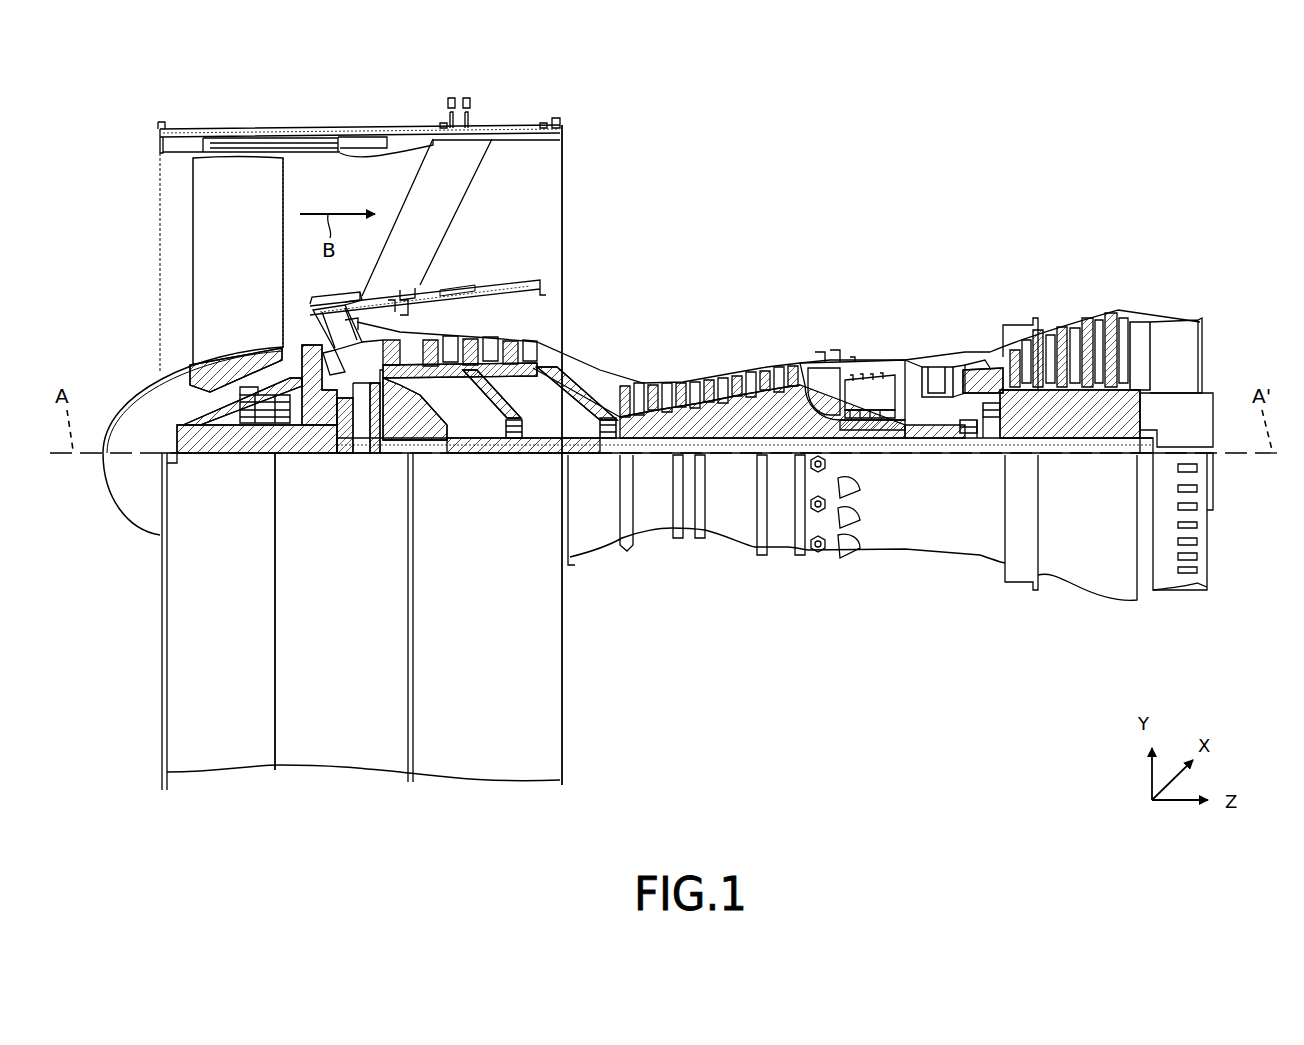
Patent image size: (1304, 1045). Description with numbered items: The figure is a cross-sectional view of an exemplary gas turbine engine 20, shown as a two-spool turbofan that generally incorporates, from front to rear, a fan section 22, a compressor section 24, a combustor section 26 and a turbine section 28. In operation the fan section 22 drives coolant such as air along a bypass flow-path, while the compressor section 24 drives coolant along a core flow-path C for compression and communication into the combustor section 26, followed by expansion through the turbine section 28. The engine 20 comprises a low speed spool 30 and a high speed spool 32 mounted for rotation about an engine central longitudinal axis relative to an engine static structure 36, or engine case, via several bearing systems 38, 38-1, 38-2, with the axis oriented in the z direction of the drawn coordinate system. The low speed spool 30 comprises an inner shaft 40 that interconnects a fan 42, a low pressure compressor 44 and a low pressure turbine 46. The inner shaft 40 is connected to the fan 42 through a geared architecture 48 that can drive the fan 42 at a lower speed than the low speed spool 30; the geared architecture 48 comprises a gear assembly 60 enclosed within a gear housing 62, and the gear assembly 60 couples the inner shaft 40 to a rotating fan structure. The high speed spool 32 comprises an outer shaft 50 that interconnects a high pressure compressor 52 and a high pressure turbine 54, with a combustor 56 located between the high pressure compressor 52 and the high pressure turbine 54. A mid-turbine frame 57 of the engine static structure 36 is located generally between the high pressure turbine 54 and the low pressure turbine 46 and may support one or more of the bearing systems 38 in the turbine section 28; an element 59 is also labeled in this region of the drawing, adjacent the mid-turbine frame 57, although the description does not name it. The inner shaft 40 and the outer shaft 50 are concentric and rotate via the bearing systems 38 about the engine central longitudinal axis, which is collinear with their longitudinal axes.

The gas turbine engine 20 is at (915, 168).
The fan section 22 is at (405, 108).
The compressor section 24 is at (415, 244).
The combustor section 26 is at (918, 244).
The turbine section 28 is at (1145, 244).
The low speed spool 30 is at (740, 462).
The high speed spool 32 is at (780, 415).
The engine static structure 36 is at (337, 748).
The bearing system 38 is at (975, 455).
The bearing system 38-1 is at (250, 432).
The bearing system 38-2 is at (512, 440).
The inner shaft 40 is at (585, 457).
The fan 42 is at (247, 259).
The low pressure compressor 44 is at (492, 348).
The low pressure turbine 46 is at (1072, 332).
The geared architecture 48 is at (370, 478).
The outer shaft 50 is at (855, 430).
The high pressure compressor 52 is at (720, 412).
The high pressure turbine 54 is at (932, 368).
The combustor 56 is at (855, 392).
The mid-turbine frame 57 is at (985, 376).
The airfoils/vanes 59 is at (985, 386).
The gear assembly 60 is at (378, 434).
The gear housing 62 is at (378, 405).
The core flow-path C is at (312, 326).